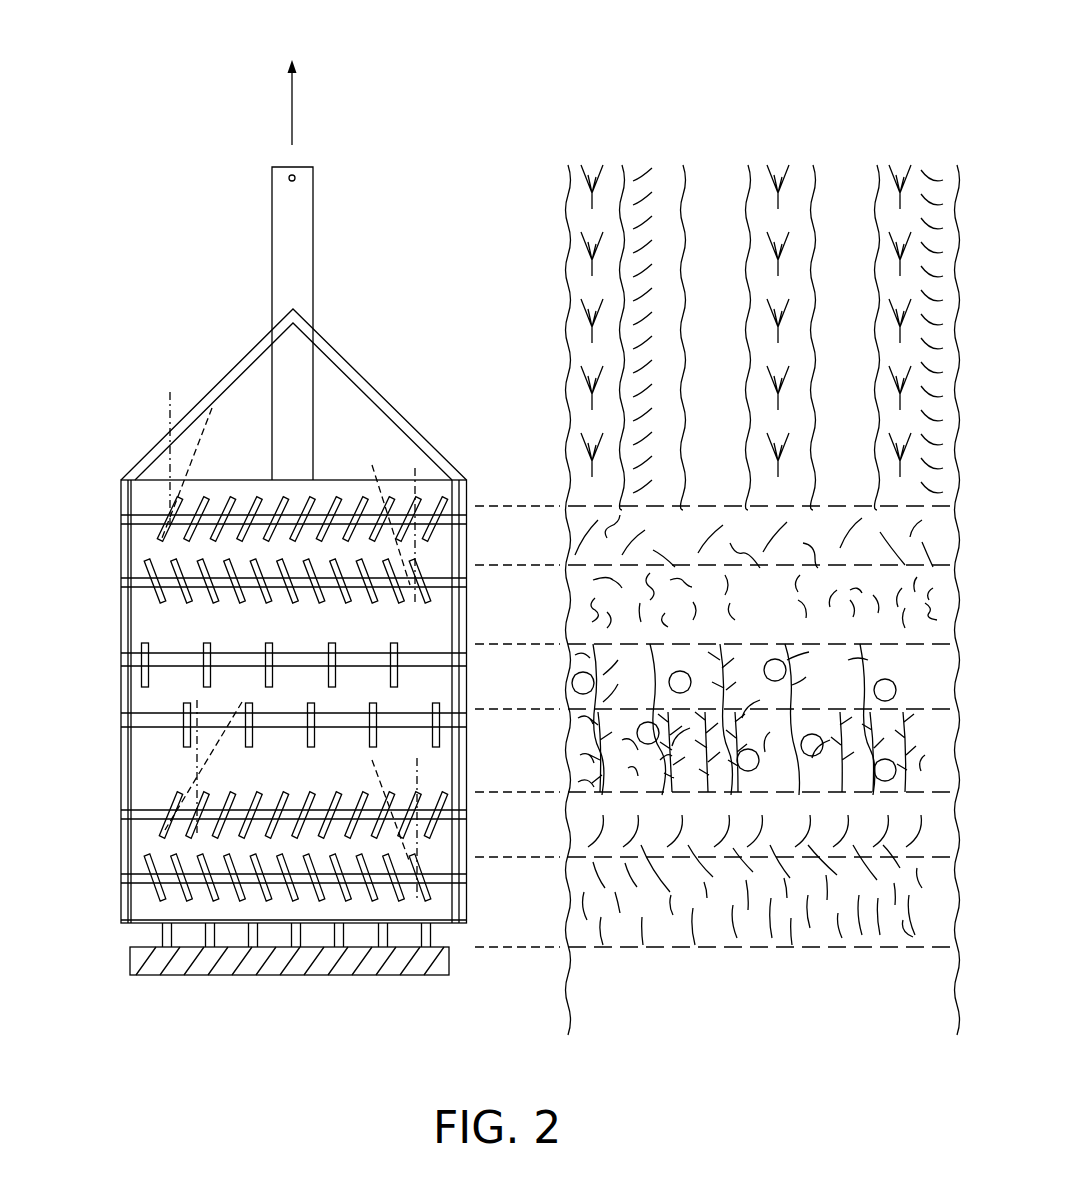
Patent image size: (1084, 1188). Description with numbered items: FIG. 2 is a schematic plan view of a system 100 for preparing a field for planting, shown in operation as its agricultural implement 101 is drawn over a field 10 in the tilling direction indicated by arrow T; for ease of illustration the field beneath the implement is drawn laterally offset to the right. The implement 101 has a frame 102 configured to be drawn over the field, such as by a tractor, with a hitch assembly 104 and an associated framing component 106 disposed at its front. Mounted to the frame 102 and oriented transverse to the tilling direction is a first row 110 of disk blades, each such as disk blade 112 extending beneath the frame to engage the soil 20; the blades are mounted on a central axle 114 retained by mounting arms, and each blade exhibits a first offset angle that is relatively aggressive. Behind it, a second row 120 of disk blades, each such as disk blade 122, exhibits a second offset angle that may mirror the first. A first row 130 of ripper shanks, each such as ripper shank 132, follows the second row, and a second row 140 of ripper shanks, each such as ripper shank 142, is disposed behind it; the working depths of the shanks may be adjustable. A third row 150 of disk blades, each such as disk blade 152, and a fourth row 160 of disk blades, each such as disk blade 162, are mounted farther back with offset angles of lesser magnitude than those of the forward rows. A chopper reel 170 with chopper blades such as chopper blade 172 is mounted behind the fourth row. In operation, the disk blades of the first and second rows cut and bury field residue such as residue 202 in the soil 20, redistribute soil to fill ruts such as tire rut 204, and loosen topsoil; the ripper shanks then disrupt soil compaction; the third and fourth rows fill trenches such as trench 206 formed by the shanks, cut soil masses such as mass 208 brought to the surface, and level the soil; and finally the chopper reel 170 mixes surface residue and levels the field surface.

The field 10 is at (840, 120).
The soil 20 is at (856, 391).
The system 100 is at (195, 160).
The agricultural implement 101 is at (206, 248).
The frame 102 is at (121, 490).
The hitch assembly 104 is at (330, 190).
The framing component 106 is at (372, 376).
The first row of disk blades 110 is at (480, 519).
The disk blade 112 is at (160, 537).
The central axle 114 is at (213, 518).
The second row of disk blades 120 is at (480, 582).
The disk blade 122 is at (160, 600).
The first row of ripper shanks 130 is at (480, 660).
The ripper shank 132 is at (147, 675).
The second row of ripper shanks 140 is at (480, 720).
The ripper shank 142 is at (187, 745).
The third row of disk blades 150 is at (480, 815).
The disk blade 152 is at (160, 835).
The fourth row of disk blades 160 is at (480, 878).
The disk blade 162 is at (160, 900).
The chopper reel 170 is at (468, 958).
The chopper blade 172 is at (130, 963).
The residue 202 is at (779, 375).
The tire rut 204 is at (668, 455).
The trench 206 is at (752, 661).
The mass 208 is at (896, 692).